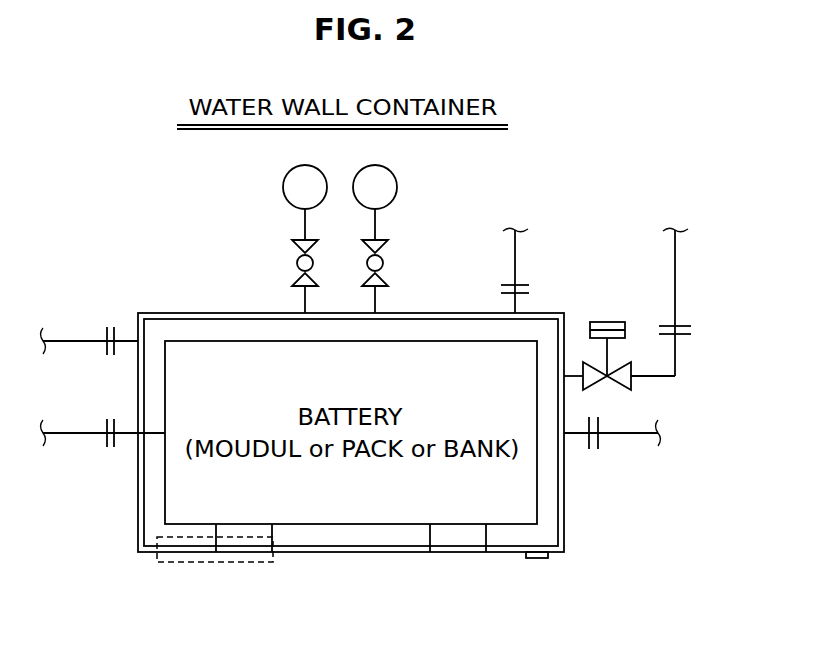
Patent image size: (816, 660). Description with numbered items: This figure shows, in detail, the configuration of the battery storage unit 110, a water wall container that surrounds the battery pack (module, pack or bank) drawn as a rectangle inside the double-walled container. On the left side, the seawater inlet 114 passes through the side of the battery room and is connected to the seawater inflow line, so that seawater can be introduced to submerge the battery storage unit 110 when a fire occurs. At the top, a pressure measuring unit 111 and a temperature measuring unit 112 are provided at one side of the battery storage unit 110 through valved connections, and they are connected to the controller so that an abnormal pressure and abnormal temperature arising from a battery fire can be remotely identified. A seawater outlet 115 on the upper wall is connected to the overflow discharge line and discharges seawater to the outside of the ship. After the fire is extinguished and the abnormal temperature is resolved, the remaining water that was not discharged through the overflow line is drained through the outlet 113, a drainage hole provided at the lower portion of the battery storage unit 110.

The battery storage unit 110 is at (564, 505).
The pressure measuring unit 111 is at (283, 187).
The temperature measuring unit 112 is at (397, 187).
The outlet 113 is at (537, 558).
The seawater inlet 114 is at (105, 330).
The seawater outlet 115 is at (525, 284).